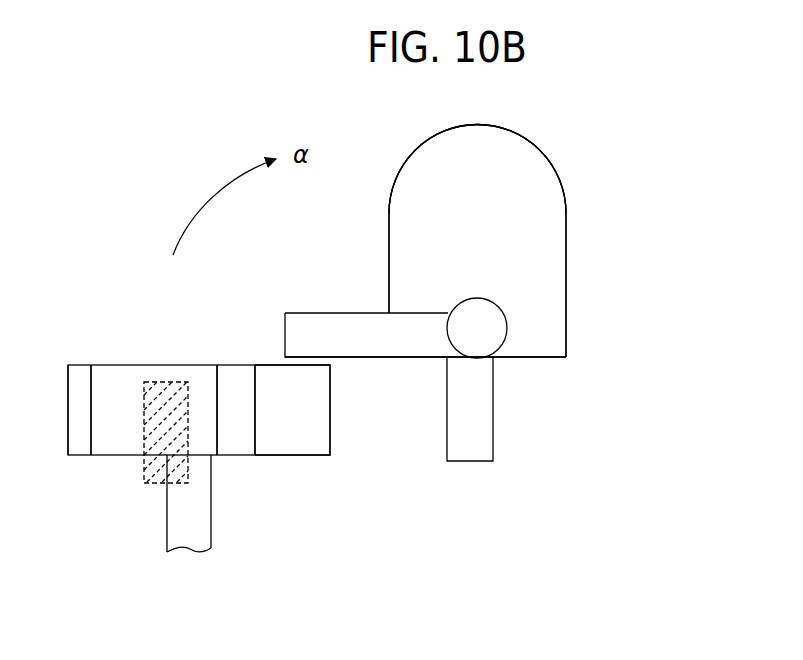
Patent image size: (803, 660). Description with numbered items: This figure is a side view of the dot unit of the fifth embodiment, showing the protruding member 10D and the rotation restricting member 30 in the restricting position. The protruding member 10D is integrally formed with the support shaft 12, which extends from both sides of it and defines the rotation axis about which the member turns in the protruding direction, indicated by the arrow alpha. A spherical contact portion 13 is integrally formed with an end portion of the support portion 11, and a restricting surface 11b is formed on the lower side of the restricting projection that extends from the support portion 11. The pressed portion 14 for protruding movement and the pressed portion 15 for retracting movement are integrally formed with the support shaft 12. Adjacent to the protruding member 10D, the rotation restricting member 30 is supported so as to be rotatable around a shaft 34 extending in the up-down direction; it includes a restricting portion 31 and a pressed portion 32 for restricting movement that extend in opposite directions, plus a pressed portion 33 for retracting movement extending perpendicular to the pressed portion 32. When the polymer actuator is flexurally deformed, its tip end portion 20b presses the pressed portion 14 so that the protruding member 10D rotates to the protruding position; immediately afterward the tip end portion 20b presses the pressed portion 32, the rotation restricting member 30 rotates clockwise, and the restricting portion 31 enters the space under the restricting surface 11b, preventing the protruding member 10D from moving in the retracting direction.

The protruding member 10D is at (594, 231).
The support portion 11 is at (550, 268).
The restricting surface 11b is at (385, 357).
The support shaft 12 is at (492, 328).
The contact portion 13 is at (477, 125).
The pressed portion for protruding movement 14 is at (335, 328).
The pressed portion for retracting movement 15 is at (472, 452).
The tip end portion 20b is at (147, 470).
The rotation restricting member 30 is at (171, 338).
The restricting portion 31 is at (297, 445).
The pressed portion for restricting movement 32 is at (115, 380).
The pressed portion for retracting movement 33 is at (235, 380).
The shaft 34 is at (178, 535).